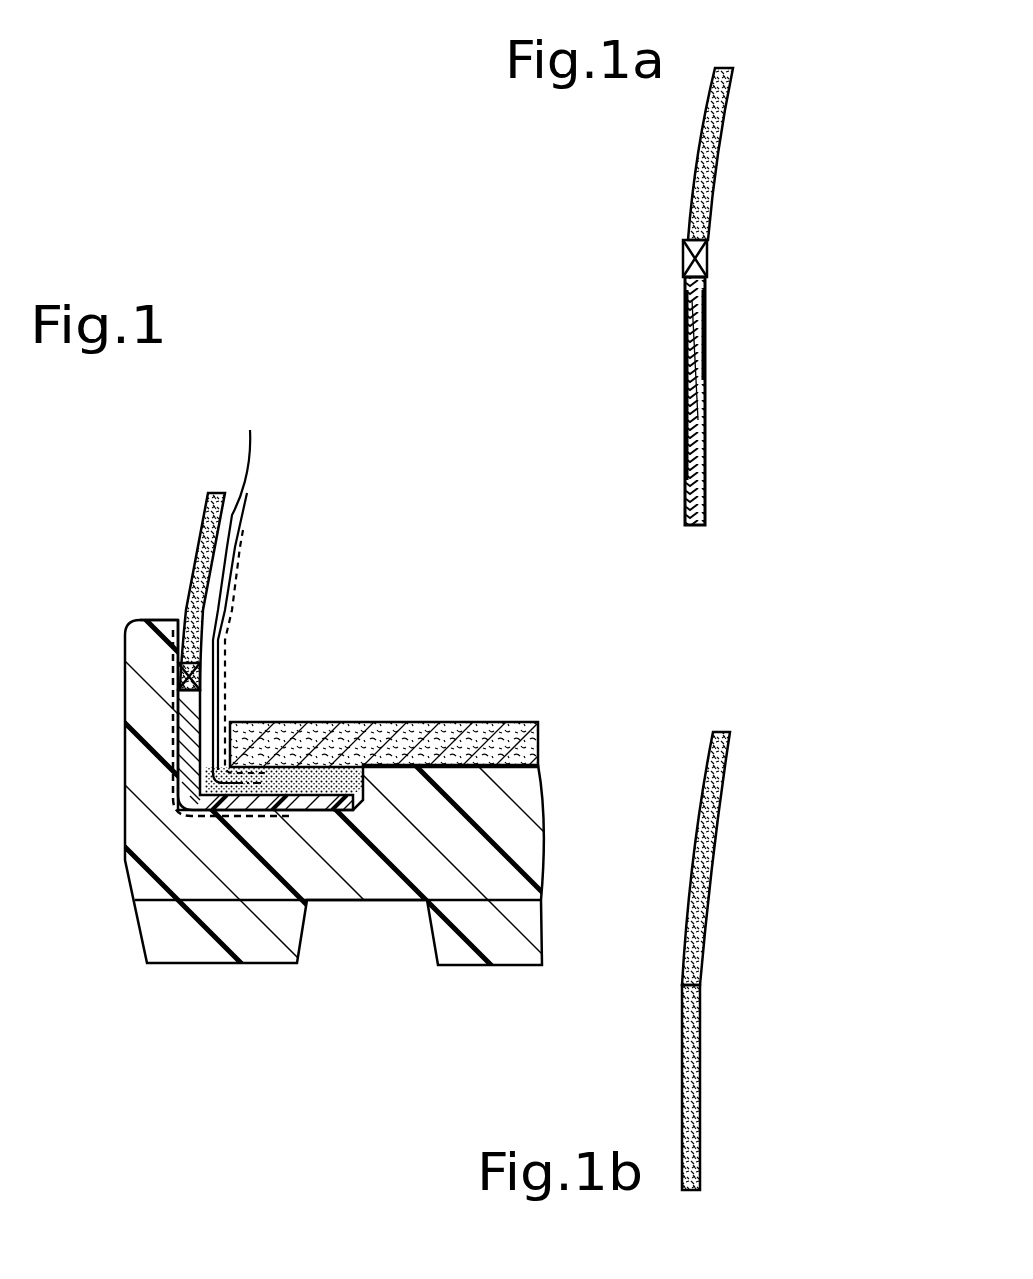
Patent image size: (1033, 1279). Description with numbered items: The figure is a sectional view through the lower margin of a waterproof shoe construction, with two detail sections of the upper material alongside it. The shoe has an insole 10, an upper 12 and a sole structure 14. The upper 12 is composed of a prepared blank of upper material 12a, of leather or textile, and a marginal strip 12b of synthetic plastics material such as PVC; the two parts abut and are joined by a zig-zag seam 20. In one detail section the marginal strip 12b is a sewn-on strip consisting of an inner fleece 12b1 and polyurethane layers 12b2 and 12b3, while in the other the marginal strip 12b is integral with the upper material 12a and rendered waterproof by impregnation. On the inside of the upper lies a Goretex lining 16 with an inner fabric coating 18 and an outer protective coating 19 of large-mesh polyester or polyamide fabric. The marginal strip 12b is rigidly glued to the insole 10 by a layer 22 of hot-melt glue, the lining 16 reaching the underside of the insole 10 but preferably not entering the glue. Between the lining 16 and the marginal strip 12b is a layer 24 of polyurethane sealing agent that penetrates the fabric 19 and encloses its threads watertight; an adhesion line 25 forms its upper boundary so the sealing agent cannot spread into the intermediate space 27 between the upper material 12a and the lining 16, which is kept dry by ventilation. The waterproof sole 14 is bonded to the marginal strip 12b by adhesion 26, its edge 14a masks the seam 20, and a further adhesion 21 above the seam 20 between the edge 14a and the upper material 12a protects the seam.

In FIG. 1, the insole 10 is at (498, 722).
In FIG. 1, the upper 12 is at (193, 540).
In FIG. 1, the upper material 12a is at (197, 580).
In FIG. 1A, the upper material 12a is at (703, 147).
In FIG. 1B, the upper material 12a is at (708, 835).
In FIG. 1, the marginal strip 12b is at (173, 777).
In FIG. 1A, the marginal strip 12b is at (685, 333).
In FIG. 1B, the marginal strip 12b is at (682, 1058).
In FIG. 1A, the inner fleece 12b1 is at (700, 472).
In FIG. 1A, the polyurethane layer 12b2 is at (685, 422).
In FIG. 1A, the polyurethane layer 12b3 is at (703, 385).
In FIG. 1, the sole structure 14 is at (130, 885).
In FIG. 1, the edge of the sole 14a is at (133, 643).
In FIG. 1, the Goretex lining 16 is at (243, 513).
In FIG. 1, the inner fabric coating 18 is at (237, 562).
In FIG. 1, the outer protective coating 19 is at (239, 589).
In FIG. 1, the zig-zag seam 20 is at (177, 693).
In FIG. 1, the adhesion 21 is at (177, 657).
In FIG. 1, the layer of hot-melt glue 22 is at (363, 787).
In FIG. 1, the layer of polyurethane sealing agent 24 is at (220, 703).
In FIG. 1, the adhesion line 25 is at (213, 610).
In FIG. 1, the adhesion 26 is at (187, 808).
In FIG. 1, the intermediate space 27 is at (200, 527).